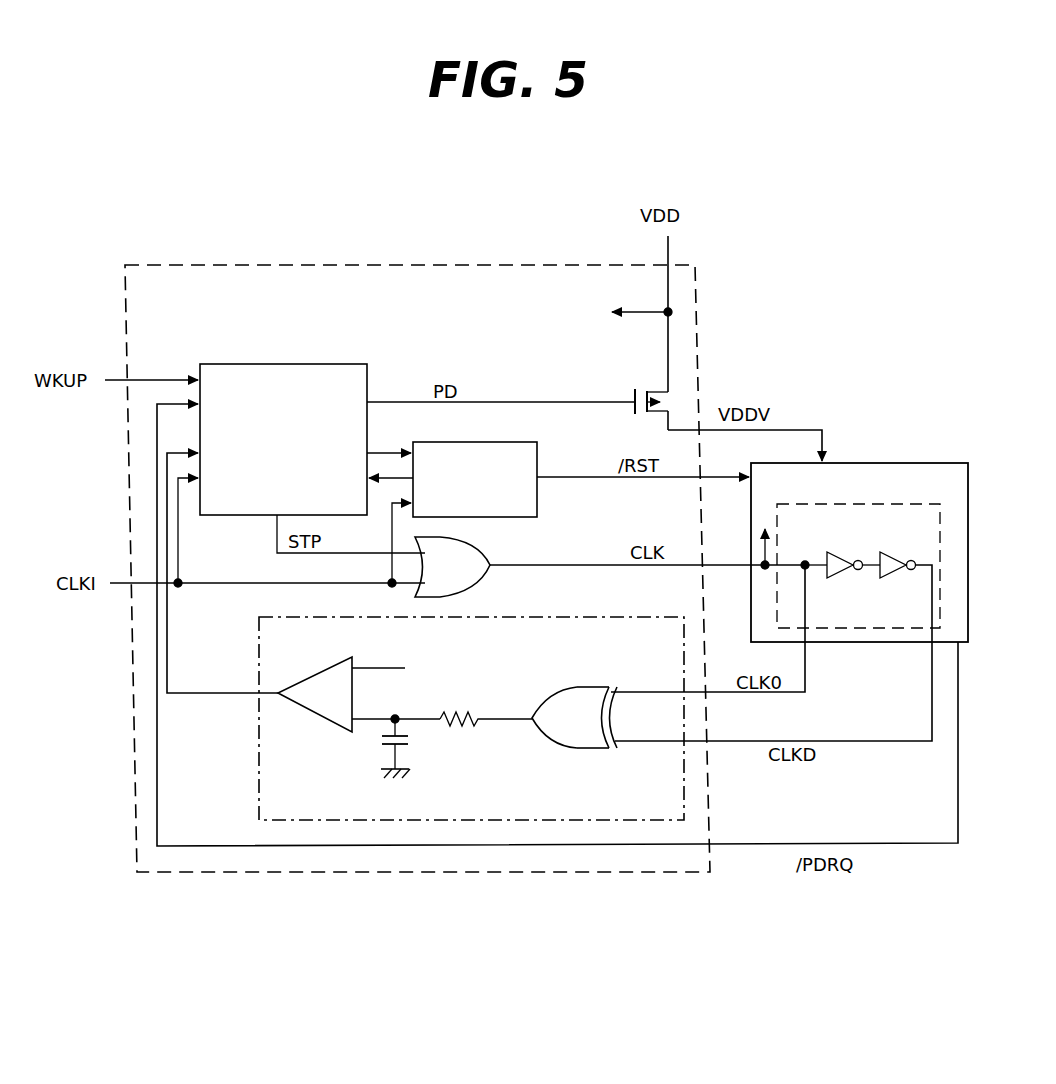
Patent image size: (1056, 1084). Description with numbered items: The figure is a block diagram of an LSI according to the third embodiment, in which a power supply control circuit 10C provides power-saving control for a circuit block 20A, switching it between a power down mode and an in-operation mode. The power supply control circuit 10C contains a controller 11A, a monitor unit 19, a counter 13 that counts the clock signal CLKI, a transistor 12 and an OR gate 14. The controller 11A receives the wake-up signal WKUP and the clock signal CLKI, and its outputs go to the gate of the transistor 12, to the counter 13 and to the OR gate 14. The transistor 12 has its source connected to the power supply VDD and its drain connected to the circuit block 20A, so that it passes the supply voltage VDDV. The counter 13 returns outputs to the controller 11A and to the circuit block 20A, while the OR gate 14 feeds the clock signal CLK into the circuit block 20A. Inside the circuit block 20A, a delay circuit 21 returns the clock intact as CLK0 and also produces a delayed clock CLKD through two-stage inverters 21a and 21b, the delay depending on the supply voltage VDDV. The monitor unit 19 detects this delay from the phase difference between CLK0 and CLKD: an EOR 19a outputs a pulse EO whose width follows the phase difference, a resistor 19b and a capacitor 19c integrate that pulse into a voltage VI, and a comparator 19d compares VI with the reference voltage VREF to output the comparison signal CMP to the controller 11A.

The power supply control circuit 10C is at (240, 265).
The controller 11A is at (302, 364).
The transistor 12 is at (636, 390).
The counter 13 is at (539, 448).
The OR gate 14 is at (495, 565).
The monitor unit 19 is at (425, 636).
The EOR 19a is at (574, 750).
The resistor 19b is at (472, 726).
The capacitor 19c is at (412, 756).
The comparator 19d is at (318, 732).
The circuit block 20A is at (898, 463).
The delay circuit 21 is at (850, 604).
The inverter 21a is at (847, 552).
The inverter 21b is at (893, 569).